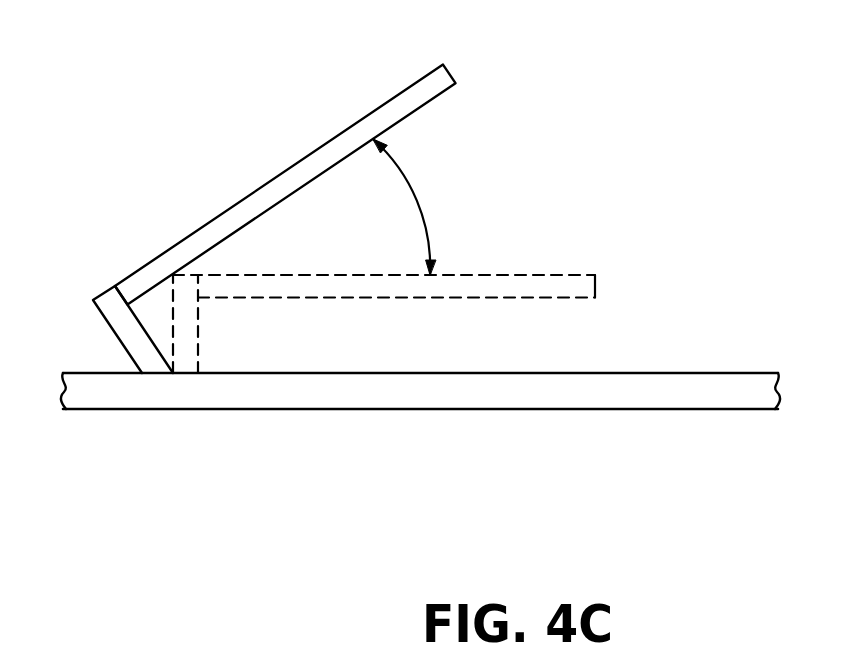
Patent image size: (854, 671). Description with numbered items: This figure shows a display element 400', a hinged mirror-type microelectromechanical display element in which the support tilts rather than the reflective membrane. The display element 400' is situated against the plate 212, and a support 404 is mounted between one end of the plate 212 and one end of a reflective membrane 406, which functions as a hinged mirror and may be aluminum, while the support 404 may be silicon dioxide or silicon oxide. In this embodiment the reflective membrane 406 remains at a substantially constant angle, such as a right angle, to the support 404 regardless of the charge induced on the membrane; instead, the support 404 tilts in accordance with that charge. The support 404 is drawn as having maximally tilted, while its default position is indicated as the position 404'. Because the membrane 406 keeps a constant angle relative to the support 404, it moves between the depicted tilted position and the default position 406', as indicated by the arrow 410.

The plate 212 is at (140, 403).
The support 404 is at (93, 329).
The reflective membrane 406 is at (318, 166).
The default position of the support 404' is at (224, 324).
The default position of the membrane 406' is at (422, 268).
The arrow 410 is at (417, 202).
The display element 400' is at (766, 158).